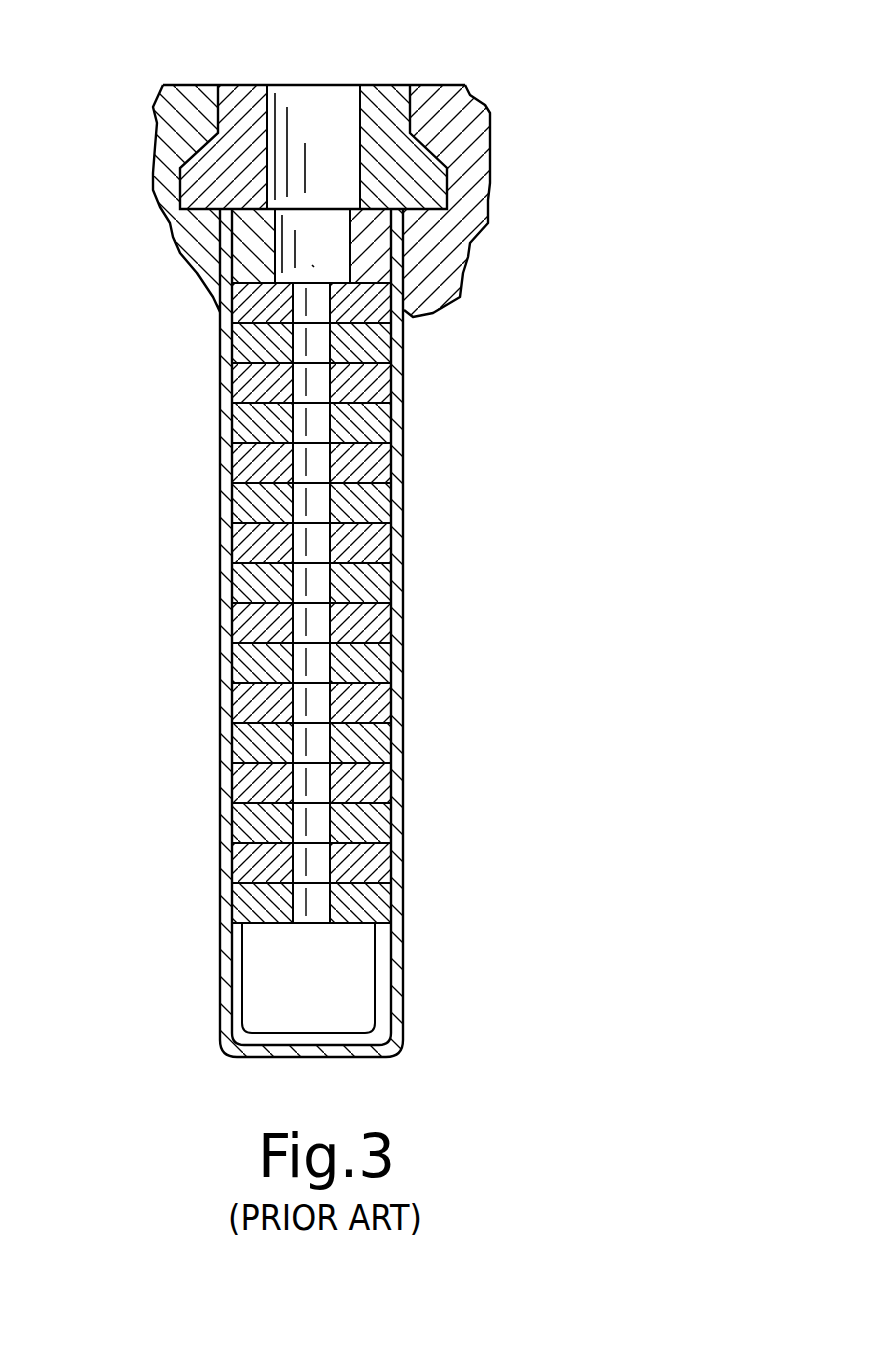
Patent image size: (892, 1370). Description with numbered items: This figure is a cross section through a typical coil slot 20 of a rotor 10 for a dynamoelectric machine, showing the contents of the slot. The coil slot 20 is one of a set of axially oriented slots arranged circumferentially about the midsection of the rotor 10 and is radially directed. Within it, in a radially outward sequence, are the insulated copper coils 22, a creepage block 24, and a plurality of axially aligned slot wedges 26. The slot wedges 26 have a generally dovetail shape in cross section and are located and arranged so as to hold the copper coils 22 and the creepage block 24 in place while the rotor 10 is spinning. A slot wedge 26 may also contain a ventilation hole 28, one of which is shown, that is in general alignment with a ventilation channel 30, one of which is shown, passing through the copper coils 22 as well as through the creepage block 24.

The rotor 10 is at (490, 105).
The coil slot 20 is at (232, 630).
The insulated copper coils 22 is at (360, 465).
The creepage block 24 is at (370, 250).
The slot wedges 26 is at (262, 88).
The ventilation hole 28 is at (352, 126).
The ventilation channel 30 is at (310, 783).